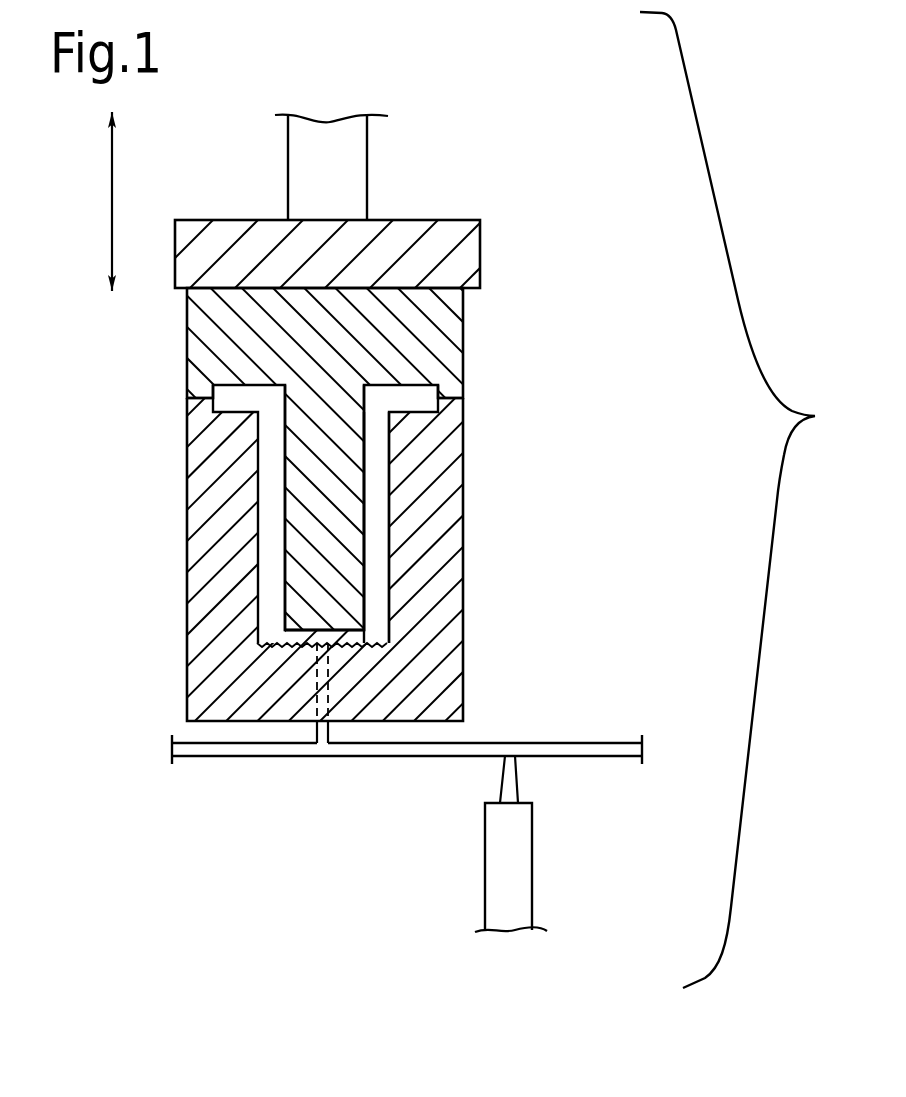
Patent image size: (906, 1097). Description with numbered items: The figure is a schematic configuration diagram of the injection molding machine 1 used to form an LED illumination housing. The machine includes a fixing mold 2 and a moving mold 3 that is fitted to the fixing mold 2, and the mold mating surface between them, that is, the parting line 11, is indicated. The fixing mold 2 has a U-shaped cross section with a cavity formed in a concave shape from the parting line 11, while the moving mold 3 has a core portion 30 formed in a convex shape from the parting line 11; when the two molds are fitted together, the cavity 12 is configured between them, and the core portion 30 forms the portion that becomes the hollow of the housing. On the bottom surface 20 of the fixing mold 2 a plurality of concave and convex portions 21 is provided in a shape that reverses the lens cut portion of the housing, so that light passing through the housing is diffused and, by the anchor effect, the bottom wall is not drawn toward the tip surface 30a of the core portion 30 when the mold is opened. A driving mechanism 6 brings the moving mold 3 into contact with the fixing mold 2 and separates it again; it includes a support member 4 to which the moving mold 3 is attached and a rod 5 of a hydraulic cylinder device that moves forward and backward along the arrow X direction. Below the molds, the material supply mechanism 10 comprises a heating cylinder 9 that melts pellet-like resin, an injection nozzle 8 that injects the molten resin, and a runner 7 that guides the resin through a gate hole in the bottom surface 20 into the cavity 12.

The injection molding machine 1 is at (815, 416).
The fixing mold 2 is at (466, 447).
The moving mold 3 is at (466, 330).
The support member 4 is at (480, 243).
The rod 5 is at (358, 148).
The driving mechanism 6 is at (456, 177).
The runner 7 is at (483, 740).
The injection nozzle 8 is at (517, 790).
The heating cylinder 9 is at (532, 876).
The material supply mechanism 10 is at (608, 717).
The mold mating surface (parting line) 11 is at (450, 392).
The cavity 12 is at (377, 522).
The bottom surface 20 is at (355, 638).
The concave and convex portions 21 is at (262, 640).
The core portion 30 is at (300, 490).
The tip surface 30a is at (262, 638).
The arrow X direction X is at (112, 183).